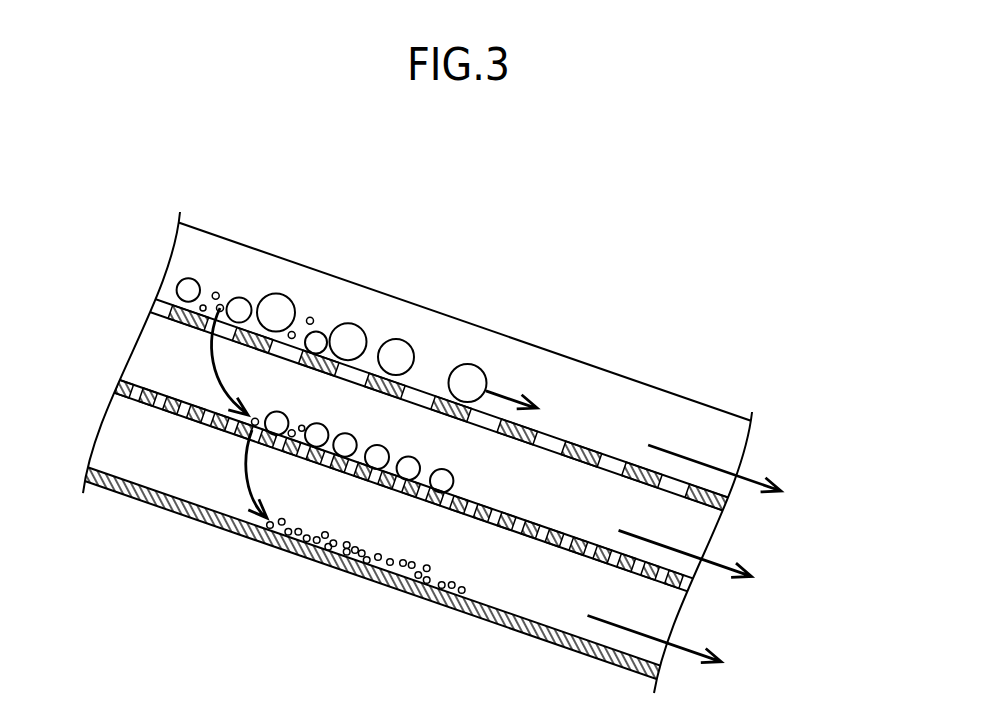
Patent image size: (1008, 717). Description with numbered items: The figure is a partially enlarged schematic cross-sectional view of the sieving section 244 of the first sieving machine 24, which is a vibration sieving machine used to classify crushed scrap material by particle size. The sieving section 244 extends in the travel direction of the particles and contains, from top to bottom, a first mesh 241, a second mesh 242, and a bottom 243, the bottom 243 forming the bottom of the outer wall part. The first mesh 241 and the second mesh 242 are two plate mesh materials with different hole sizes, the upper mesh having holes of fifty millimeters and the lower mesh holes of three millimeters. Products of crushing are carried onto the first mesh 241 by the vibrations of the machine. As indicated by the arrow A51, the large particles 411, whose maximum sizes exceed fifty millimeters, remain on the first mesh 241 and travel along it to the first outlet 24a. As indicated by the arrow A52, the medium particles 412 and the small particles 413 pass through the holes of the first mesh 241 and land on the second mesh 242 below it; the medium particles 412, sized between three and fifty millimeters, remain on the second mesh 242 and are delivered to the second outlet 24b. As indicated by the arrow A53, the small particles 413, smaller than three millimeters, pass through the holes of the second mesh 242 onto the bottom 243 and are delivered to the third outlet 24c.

The first sieving machine 24 is at (418, 420).
The sieving section 244 is at (298, 235).
The first mesh 241 is at (409, 402).
The second mesh 242 is at (341, 472).
The bottom 243 is at (290, 539).
The large particles 411 is at (470, 377).
The medium particles 412 is at (454, 476).
The small particles 413 is at (430, 566).
The arrow A51 is at (507, 395).
The arrow A52 is at (213, 374).
The arrow A53 is at (250, 475).
The first outlet 24a is at (744, 477).
The second outlet 24b is at (714, 563).
The third outlet 24c is at (684, 649).